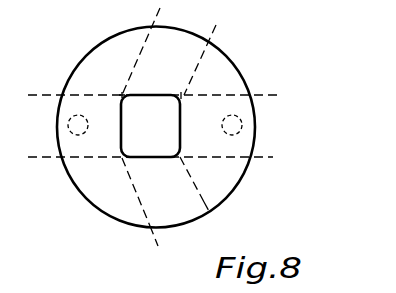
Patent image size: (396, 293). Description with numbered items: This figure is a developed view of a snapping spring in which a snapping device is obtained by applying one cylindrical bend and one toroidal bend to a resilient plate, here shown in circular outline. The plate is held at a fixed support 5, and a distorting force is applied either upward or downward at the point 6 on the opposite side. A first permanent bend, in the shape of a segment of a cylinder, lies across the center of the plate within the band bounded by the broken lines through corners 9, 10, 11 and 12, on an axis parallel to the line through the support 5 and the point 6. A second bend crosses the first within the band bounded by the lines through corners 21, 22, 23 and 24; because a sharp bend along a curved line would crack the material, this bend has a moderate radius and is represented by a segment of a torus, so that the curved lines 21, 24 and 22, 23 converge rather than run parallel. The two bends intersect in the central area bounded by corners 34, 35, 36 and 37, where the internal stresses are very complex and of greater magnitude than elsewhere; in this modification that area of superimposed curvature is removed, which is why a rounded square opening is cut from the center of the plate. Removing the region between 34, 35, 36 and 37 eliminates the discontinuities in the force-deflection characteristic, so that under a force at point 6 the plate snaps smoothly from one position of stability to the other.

The fixed support 5 is at (68, 128).
The point of force application 6 is at (241, 120).
The corner of first bend area 9 is at (92, 84).
The corner of first bend area 10 is at (218, 85).
The corner of first bend area 11 is at (214, 168).
The corner of first bend area 12 is at (92, 167).
The corner of second bend area 21 is at (141, 51).
The corner of second bend area 22 is at (200, 55).
The corner of second bend area 23 is at (220, 217).
The corner of second bend area 24 is at (138, 237).
The corner of bend intersection area 34 is at (138, 116).
The corner of bend intersection area 35 is at (194, 88).
The corner of bend intersection area 36 is at (193, 179).
The corner of bend intersection area 37 is at (122, 192).